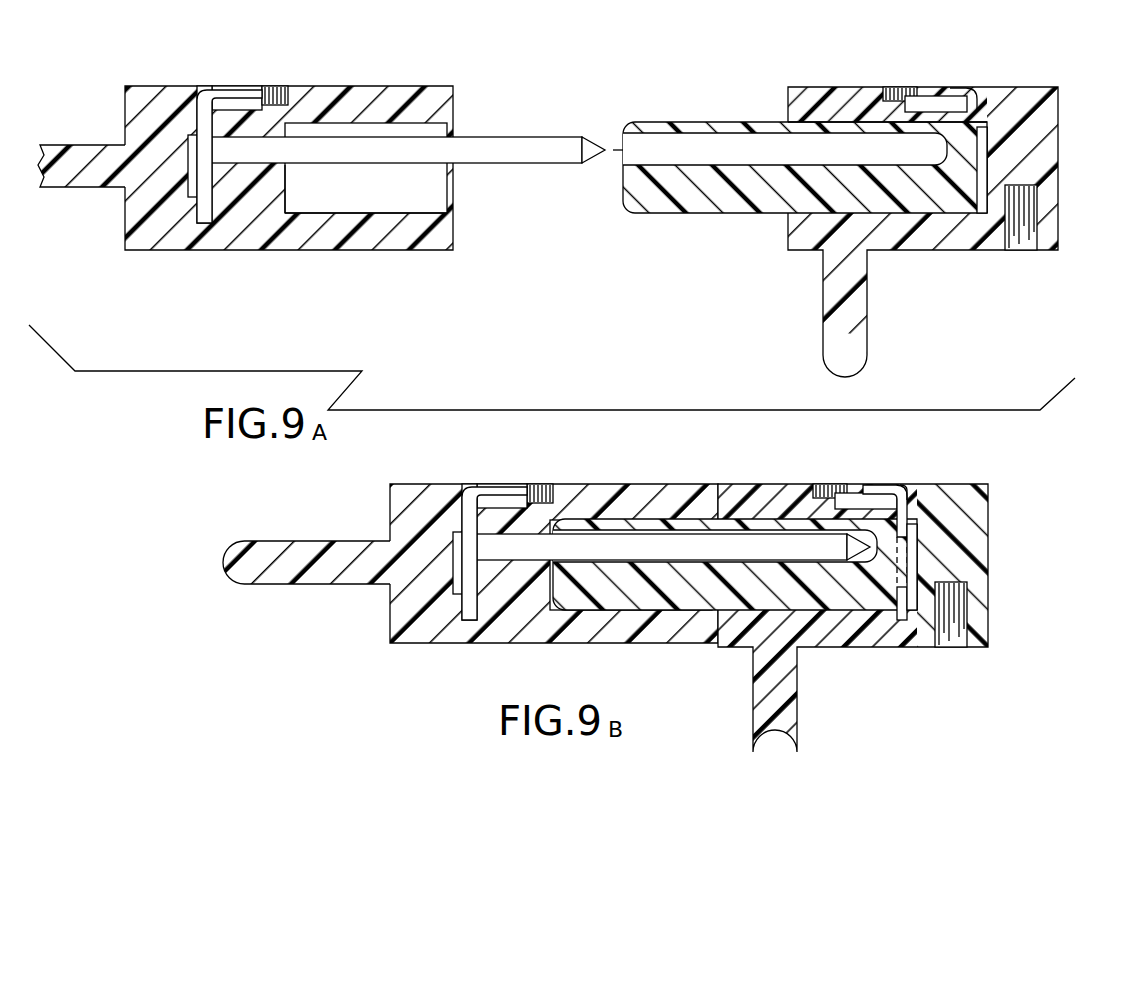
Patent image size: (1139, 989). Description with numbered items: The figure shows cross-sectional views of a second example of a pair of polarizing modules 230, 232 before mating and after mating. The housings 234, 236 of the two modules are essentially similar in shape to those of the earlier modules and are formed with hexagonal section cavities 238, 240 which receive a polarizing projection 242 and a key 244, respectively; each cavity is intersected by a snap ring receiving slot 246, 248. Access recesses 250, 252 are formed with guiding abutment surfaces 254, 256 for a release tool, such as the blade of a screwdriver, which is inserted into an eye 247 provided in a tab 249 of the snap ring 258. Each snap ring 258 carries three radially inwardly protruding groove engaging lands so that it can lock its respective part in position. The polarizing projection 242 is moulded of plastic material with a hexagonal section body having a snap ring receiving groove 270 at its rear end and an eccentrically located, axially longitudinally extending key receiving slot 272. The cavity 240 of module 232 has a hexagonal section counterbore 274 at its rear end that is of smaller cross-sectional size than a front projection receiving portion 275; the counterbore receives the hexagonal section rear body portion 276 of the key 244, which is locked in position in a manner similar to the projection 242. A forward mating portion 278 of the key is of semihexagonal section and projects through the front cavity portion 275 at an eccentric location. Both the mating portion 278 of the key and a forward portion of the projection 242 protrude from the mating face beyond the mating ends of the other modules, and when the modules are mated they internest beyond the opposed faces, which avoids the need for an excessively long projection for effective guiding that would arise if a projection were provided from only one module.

In FIG. 9A, the polarizing module 230 is at (797, 47).
In FIG. 9B, the polarizing module 230 is at (998, 498).
In FIG. 9A, the polarizing module 232 is at (446, 85).
In FIG. 9B, the polarizing module 232 is at (360, 524).
In FIG. 9A, the housing 234 is at (1035, 92).
In FIG. 9A, the housing 236 is at (138, 112).
In FIG. 9A, the hexagonal section cavity 238 is at (820, 127).
In FIG. 9A, the hexagonal section cavity 240 is at (432, 127).
In FIG. 9A, the polarizing projection 242 is at (727, 200).
In FIG. 9B, the polarizing projection 242 is at (598, 593).
In FIG. 9A, the key 244 is at (485, 155).
In FIG. 9A, the snap ring receiving slot 246 is at (972, 97).
In FIG. 9B, the eye 247 is at (897, 480).
In FIG. 9A, the snap ring receiving slot 248 is at (195, 122).
In FIG. 9B, the tab 249 is at (880, 470).
In FIG. 9A, the access recess 250 is at (908, 93).
In FIG. 9A, the access recess 252 is at (287, 88).
In FIG. 9A, the guiding abutment surface 254 is at (932, 97).
In FIG. 9A, the guiding abutment surface 256 is at (256, 100).
In FIG. 9A, the snap ring 258 is at (203, 117).
In FIG. 9B, the snap ring 258 is at (487, 502).
In FIG. 9A, the snap ring receiving groove 270 is at (990, 143).
In FIG. 9A, the key receiving slot 272 is at (688, 133).
In FIG. 9B, the key receiving slot 272 is at (765, 528).
In FIG. 9A, the hexagonal section counterbore 274 is at (262, 197).
In FIG. 9A, the front projection receiving portion 275 is at (403, 208).
In FIG. 9B, the front projection receiving portion 275 is at (677, 603).
In FIG. 9A, the rear body portion 276 is at (238, 185).
In FIG. 9A, the forward mating portion 278 is at (517, 138).
In FIG. 9B, the forward mating portion 278 is at (645, 540).